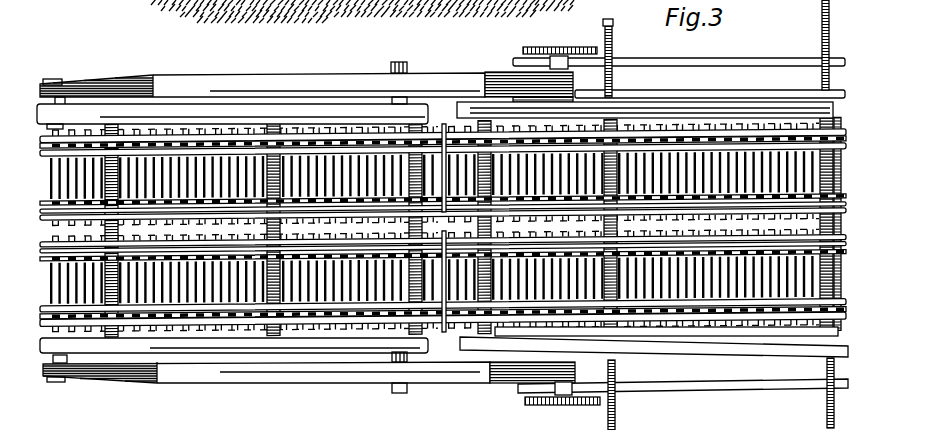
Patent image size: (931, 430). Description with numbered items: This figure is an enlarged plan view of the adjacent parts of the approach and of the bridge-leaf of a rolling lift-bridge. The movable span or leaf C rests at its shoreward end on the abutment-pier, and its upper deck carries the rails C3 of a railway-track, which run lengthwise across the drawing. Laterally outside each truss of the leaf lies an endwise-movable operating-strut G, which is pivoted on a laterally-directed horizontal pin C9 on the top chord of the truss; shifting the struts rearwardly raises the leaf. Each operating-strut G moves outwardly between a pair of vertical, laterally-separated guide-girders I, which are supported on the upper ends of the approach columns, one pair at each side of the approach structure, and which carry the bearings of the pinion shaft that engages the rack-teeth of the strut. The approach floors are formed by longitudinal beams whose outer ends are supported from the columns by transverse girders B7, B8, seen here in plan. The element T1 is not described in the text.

The operating-strut G is at (240, 75).
The movable span or leaf C is at (232, 228).
The horizontal pin C9 is at (62, 100).
The rails of a railway-track C3 is at (323, 133).
The tie block T1 is at (416, 93).
The guide-girder I is at (736, 57).
The transverse girder B7 is at (620, 118).
The transverse girder B8 is at (487, 336).